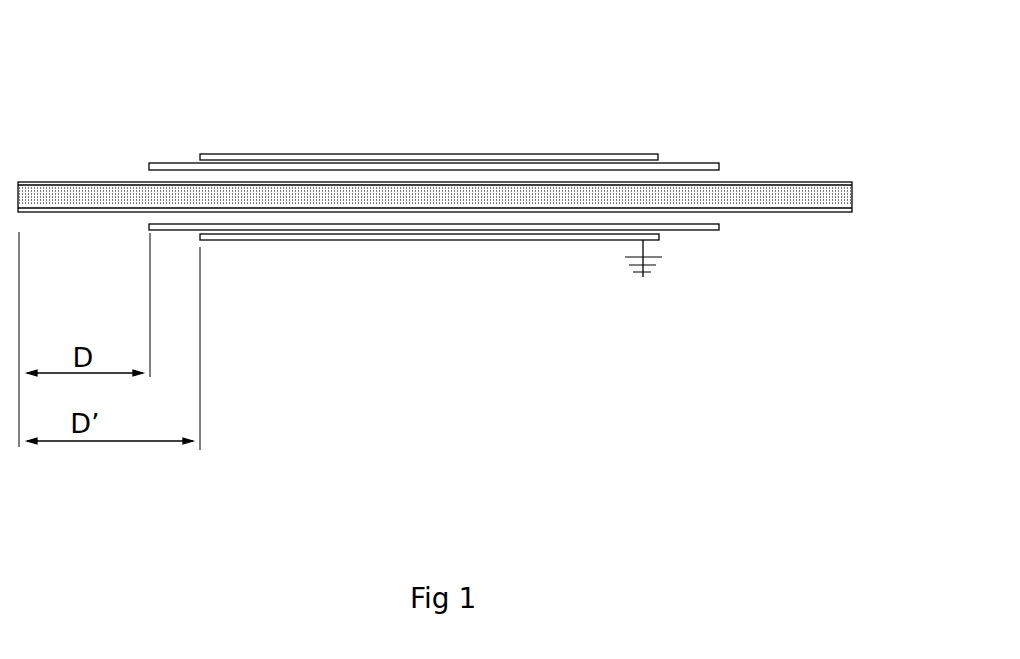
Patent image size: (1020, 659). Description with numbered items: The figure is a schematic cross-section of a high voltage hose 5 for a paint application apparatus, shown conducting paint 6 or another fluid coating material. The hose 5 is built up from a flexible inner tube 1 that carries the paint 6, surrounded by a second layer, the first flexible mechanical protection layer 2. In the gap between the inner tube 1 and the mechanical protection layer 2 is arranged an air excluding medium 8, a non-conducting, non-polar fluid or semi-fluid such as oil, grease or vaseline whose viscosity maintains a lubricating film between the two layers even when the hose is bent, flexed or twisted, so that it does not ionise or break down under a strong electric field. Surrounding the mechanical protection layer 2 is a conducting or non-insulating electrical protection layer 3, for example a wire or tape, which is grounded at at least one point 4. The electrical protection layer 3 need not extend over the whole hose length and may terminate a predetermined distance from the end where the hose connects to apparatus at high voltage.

The flexible inner tube 1 is at (435, 302).
The first flexible mechanical protection layer 2 is at (434, 296).
The electrical protection layer 3 is at (429, 273).
The grounding point 4 is at (605, 363).
The high voltage hose 5 is at (593, 122).
The paint 6 is at (828, 200).
The air excluding medium 8 is at (197, 177).